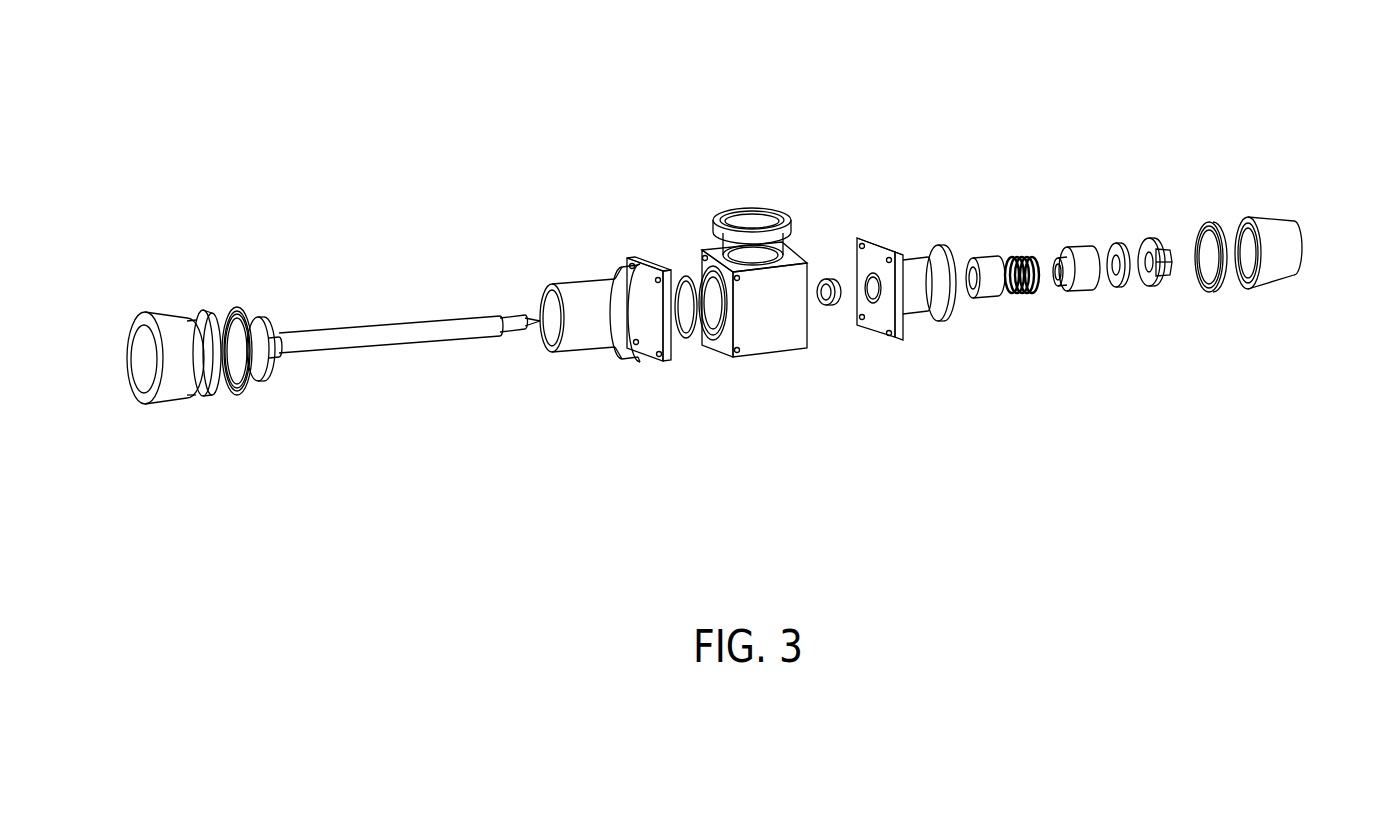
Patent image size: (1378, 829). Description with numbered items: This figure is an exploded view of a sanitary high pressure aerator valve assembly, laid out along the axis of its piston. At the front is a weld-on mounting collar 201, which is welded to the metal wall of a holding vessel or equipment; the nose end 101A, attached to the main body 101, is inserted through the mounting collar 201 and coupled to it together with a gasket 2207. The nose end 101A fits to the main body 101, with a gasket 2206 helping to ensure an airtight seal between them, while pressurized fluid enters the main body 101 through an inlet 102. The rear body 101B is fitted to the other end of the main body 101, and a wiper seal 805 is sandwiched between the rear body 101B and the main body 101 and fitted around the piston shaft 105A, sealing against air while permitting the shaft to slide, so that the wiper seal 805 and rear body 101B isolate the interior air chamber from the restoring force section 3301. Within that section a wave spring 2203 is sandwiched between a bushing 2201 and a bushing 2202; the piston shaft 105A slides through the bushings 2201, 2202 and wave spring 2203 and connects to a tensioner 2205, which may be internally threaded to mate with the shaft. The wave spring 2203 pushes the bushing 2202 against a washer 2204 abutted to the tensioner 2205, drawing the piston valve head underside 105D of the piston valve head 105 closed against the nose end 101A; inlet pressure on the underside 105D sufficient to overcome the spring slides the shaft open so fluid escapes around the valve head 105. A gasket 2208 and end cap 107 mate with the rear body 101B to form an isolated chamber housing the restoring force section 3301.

The mounting collar 201 is at (160, 310).
The gasket 2207 is at (233, 307).
The piston valve head underside 105D is at (273, 317).
The piston shaft 105A is at (367, 327).
The piston valve head 105 is at (267, 373).
The nose end 101A is at (587, 352).
The gasket 2206 is at (684, 290).
The main body 101 is at (770, 355).
The inlet 102 is at (787, 217).
The wiper seal 805 is at (823, 283).
The rear body 101B is at (892, 342).
The bushing 2201 is at (982, 260).
The wave spring 2203 is at (1030, 258).
The bushing 2202 is at (1080, 287).
The washer 2204 is at (1120, 242).
The tensioner 2205 is at (1170, 280).
The gasket 2208 is at (1203, 220).
The end cap 107 is at (1267, 222).
The restoring force section 3301 is at (1170, 85).